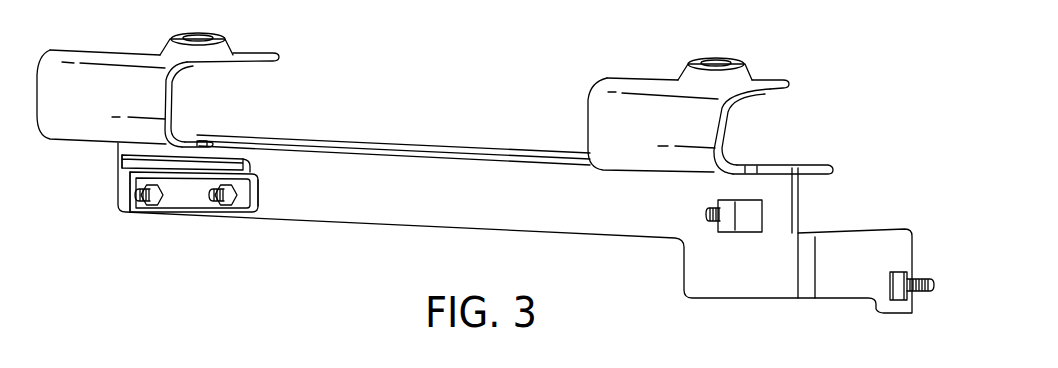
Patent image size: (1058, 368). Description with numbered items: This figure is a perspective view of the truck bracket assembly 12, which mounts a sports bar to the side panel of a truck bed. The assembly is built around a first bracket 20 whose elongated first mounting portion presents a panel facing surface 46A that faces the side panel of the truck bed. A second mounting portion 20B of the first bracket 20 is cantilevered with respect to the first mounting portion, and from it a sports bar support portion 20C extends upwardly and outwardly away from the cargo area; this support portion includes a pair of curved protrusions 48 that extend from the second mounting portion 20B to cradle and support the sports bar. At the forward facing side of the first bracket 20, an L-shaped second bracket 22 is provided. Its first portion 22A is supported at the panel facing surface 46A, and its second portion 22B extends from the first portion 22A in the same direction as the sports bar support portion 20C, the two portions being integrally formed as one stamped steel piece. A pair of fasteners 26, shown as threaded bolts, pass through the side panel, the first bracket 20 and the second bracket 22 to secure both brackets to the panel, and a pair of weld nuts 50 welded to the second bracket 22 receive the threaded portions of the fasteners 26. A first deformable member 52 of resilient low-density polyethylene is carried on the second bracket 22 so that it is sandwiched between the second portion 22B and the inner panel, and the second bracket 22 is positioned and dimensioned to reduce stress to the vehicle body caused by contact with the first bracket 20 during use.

The truck bracket assembly 12 is at (568, 32).
The first bracket 20 is at (391, 139).
The second mounting portion 20B is at (187, 137).
The sports bar support portion 20C is at (245, 65).
The second bracket 22 is at (182, 224).
The first portion 22A is at (258, 188).
The second portion 22B is at (118, 178).
The fasteners 26 is at (135, 212).
The panel facing surface 46A is at (390, 193).
The curved protrusions 48 is at (58, 88).
The weld nuts 50 is at (157, 206).
The first deformable member 52 is at (247, 163).